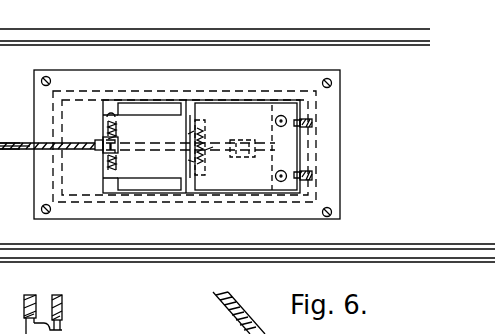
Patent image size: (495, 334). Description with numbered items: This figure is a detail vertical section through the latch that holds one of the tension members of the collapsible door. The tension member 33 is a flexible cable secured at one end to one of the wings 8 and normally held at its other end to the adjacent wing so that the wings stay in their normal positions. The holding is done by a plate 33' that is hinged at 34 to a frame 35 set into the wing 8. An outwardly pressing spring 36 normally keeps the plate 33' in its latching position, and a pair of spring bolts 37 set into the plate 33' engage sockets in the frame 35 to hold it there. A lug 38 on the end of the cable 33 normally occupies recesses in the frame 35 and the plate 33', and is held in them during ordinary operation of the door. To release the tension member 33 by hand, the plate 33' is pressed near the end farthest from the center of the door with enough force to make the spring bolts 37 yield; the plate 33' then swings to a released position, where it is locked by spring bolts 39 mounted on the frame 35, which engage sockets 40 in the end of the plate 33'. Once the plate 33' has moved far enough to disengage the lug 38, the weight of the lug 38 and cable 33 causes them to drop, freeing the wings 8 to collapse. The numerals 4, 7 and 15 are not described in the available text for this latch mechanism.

The tension member 33 is at (47, 174).
The plate 33' is at (204, 104).
The hinge 34 is at (205, 130).
The frame 35 is at (318, 127).
The spring 36 is at (247, 205).
The spring bolts 37 is at (122, 127).
The lug 38 is at (97, 157).
The spring bolts 39 is at (302, 131).
The sockets 40 is at (292, 127).
The rail member 4 is at (15, 120).
The rail member 7 is at (10, 132).
The wing 8 is at (10, 168).
The post 15 is at (74, 314).